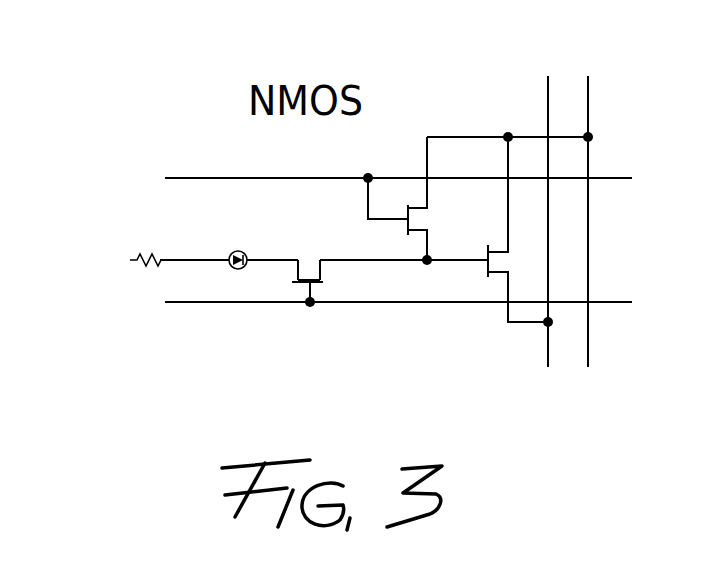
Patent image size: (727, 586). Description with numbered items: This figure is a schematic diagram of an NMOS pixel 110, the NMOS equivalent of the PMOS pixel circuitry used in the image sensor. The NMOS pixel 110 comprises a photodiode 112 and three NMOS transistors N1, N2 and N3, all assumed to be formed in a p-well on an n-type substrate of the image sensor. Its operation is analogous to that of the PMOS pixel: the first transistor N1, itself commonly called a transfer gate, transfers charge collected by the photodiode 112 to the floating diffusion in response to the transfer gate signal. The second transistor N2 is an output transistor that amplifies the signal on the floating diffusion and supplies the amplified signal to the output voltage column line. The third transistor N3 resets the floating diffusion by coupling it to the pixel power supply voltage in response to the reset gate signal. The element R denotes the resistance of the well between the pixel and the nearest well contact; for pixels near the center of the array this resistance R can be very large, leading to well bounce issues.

The NMOS pixel 110 is at (667, 96).
The photodiode 112 is at (233, 251).
The first NMOS transistor N1 is at (308, 268).
The second NMOS transistor N2 is at (518, 229).
The third NMOS transistor N3 is at (412, 198).
The well resistance R is at (147, 248).